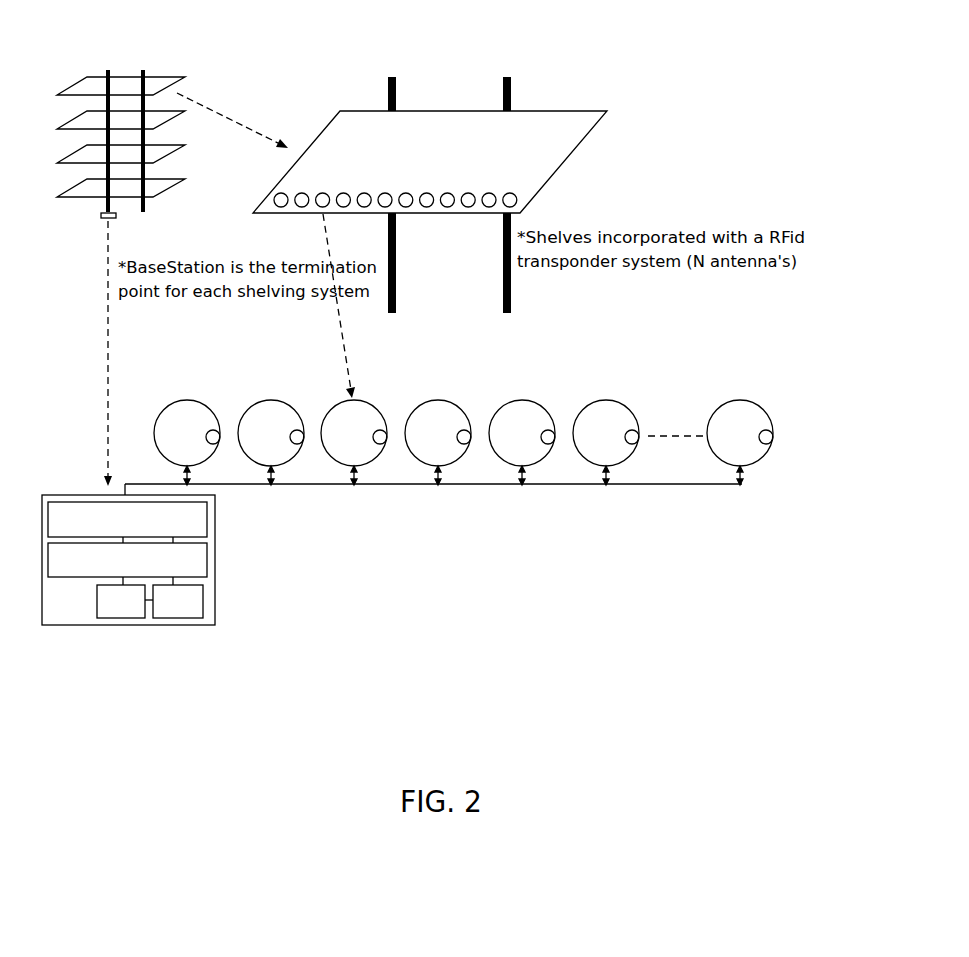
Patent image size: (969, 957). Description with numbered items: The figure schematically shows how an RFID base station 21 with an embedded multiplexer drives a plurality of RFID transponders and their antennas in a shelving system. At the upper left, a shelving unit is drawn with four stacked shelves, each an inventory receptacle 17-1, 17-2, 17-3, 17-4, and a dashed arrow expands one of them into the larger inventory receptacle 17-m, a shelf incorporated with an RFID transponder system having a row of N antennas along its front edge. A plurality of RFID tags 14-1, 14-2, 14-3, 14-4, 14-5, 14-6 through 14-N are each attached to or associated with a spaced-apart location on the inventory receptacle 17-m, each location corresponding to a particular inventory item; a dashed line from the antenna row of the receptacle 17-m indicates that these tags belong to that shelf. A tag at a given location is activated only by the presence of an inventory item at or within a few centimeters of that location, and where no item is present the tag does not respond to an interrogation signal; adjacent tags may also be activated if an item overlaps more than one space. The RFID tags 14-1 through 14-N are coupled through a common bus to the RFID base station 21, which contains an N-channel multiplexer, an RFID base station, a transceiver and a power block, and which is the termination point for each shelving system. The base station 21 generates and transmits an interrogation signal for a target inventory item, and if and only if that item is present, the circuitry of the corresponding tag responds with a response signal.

The inventory receptacle 17-1 is at (157, 83).
The inventory receptacle 17-2 is at (158, 120).
The inventory receptacle 17-3 is at (155, 153).
The inventory receptacle 17-4 is at (160, 185).
The inventory receptacle 17-m is at (558, 122).
The RFID tag 14-1 is at (185, 405).
The RFID tag 14-2 is at (269, 405).
The RFID tag 14-3 is at (352, 405).
The RFID tag 14-4 is at (436, 405).
The RFID tag 14-5 is at (520, 405).
The RFID tag 14-6 is at (604, 405).
The RFID tag 14-N is at (738, 405).
The RFID base station 21 is at (47, 493).